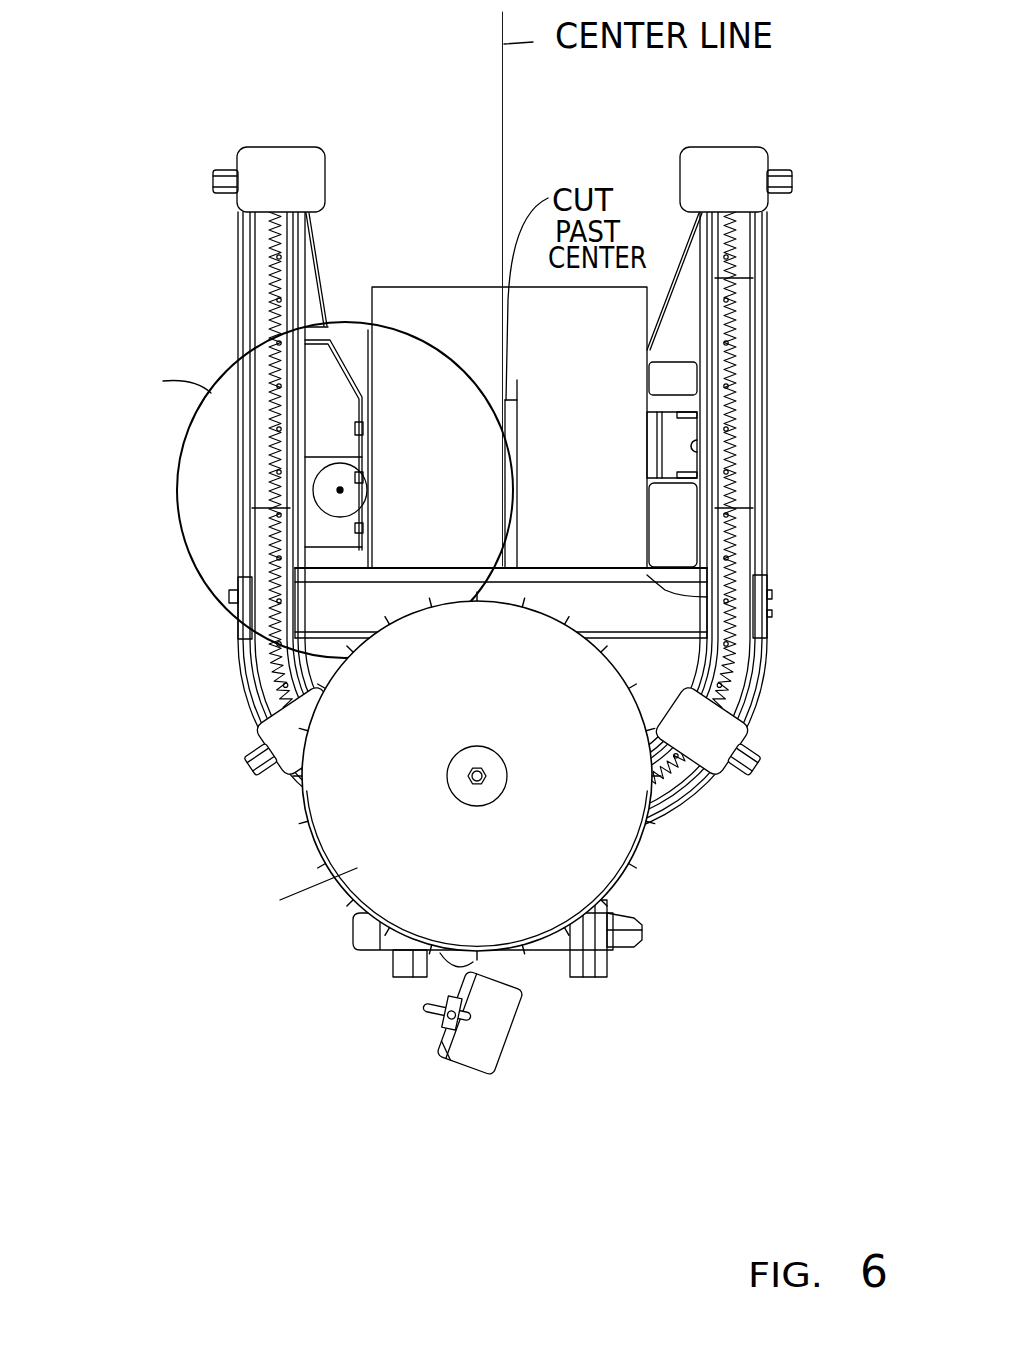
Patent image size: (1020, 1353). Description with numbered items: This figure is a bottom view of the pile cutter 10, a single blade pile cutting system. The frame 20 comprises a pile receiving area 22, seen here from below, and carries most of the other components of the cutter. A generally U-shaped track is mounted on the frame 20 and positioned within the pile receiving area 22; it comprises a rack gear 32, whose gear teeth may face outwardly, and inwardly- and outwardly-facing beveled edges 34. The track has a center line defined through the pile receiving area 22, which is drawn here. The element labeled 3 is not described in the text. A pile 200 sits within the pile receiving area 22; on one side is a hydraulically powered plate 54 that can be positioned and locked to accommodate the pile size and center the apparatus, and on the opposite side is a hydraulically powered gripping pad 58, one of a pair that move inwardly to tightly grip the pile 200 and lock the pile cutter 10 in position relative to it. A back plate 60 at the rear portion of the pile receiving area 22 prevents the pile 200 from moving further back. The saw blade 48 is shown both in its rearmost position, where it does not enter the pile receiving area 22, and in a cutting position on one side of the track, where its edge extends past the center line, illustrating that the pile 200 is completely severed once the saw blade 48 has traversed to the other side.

The pile cutter 10 is at (828, 531).
The frame 20 is at (770, 257).
The pile receiving area 22 is at (493, 208).
The guide track 3 is at (296, 240).
The rack gear 32 is at (280, 232).
The beveled edges 34 is at (283, 492).
The saw blade 48 is at (189, 556).
The hydraulically powered plate 54 is at (360, 412).
The gripping pad 58 is at (653, 445).
The back plate 60 is at (768, 597).
The pile 200 is at (625, 375).